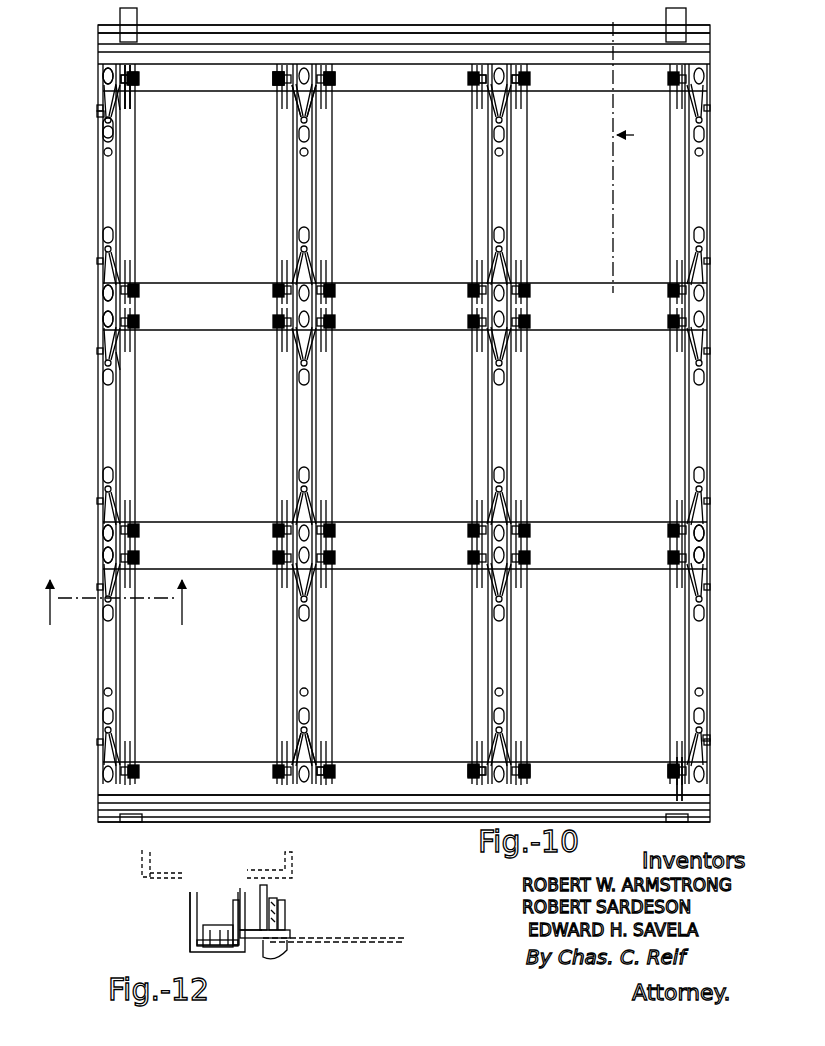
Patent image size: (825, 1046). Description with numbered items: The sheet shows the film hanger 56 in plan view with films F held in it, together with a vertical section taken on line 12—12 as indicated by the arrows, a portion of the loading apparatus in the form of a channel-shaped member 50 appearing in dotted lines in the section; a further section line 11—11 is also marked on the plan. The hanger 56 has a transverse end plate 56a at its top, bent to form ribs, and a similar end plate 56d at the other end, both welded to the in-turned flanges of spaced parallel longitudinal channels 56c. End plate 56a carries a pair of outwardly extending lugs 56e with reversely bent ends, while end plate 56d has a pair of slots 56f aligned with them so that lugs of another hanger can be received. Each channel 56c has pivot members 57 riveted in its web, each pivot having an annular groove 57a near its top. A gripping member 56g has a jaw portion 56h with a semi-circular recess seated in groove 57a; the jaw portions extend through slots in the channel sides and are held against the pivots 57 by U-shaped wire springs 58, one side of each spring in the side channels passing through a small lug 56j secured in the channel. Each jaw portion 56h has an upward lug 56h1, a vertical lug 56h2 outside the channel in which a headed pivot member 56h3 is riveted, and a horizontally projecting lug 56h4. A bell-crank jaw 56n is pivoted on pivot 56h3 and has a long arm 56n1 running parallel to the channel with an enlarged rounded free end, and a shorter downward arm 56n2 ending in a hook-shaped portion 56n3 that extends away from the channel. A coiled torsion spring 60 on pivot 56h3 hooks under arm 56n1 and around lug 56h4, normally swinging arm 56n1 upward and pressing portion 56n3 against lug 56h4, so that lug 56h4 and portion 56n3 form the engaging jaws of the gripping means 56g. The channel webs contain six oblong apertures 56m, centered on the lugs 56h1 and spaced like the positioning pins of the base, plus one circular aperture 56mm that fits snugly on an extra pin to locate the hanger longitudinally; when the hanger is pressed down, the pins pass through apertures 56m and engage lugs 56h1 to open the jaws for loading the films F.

In FIG. 10, the hanger 56 is at (96, 168).
In FIG. 10, the end plate 56a is at (358, 27).
In FIG. 10, the channel 56c is at (117, 210).
In FIG. 12, the channel 56c is at (190, 899).
In FIG. 10, the end plate 56d is at (710, 799).
In FIG. 10, the lug 56e is at (138, 15).
In FIG. 10, the aperture or slot 56f is at (128, 822).
In FIG. 10, the gripping member 56g is at (476, 98).
In FIG. 10, the jaw portion 56h is at (292, 120).
In FIG. 12, the jaw portion 56h is at (250, 940).
In FIG. 10, the lug 56h1 is at (118, 93).
In FIG. 12, the lug 56h1 is at (236, 925).
In FIG. 10, the lug 56h2 is at (126, 77).
In FIG. 12, the lug 56h2 is at (258, 893).
In FIG. 10, the headed pivot member 56h3 is at (272, 78).
In FIG. 12, the headed pivot member 56h3 is at (287, 906).
In FIG. 10, the horizontally projecting lug 56h4 is at (130, 90).
In FIG. 10, the lug 56j is at (97, 116).
In FIG. 12, the lug 56j is at (188, 907).
In FIG. 10, the aperture 56m is at (103, 89).
In FIG. 10, the circular aperture 56mm is at (113, 152).
In FIG. 10, the jaw 56n is at (676, 752).
In FIG. 10, the arm 56n1 is at (133, 115).
In FIG. 12, the arm 56n1 is at (265, 885).
In FIG. 12, the arm 56n2 is at (276, 957).
In FIG. 12, the hook-shaped terminal portion 56n3 is at (292, 941).
In FIG. 10, the pivot member 57 is at (100, 128).
In FIG. 12, the pivot member 57 is at (203, 950).
In FIG. 12, the annular groove 57a is at (205, 940).
In FIG. 10, the spring 58 is at (112, 141).
In FIG. 10, the coiled torsion spring 60 is at (282, 72).
In FIG. 12, the coiled torsion spring 60 is at (278, 896).
In FIG. 12, the member 50 is at (140, 878).
In FIG. 10, the section line 11- 11 is at (619, 157).
In FIG. 10, the section line 12- 12 is at (117, 602).
In FIG. 10, the film F is at (193, 330).